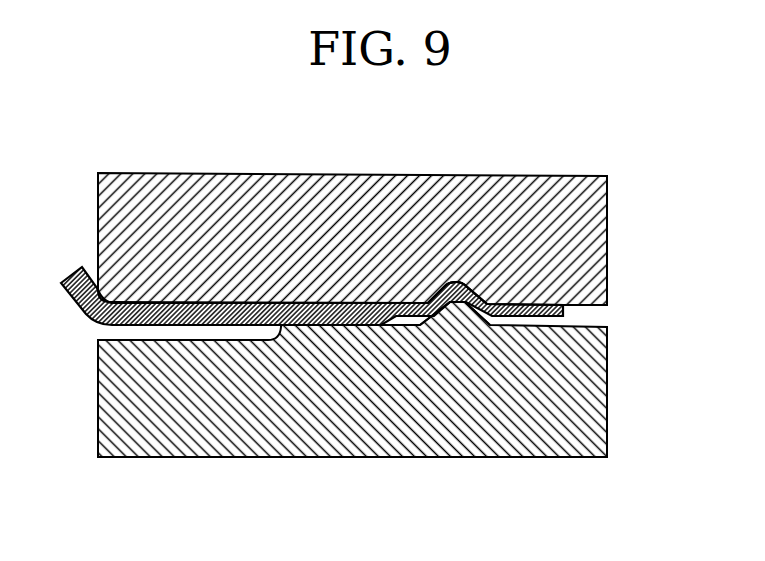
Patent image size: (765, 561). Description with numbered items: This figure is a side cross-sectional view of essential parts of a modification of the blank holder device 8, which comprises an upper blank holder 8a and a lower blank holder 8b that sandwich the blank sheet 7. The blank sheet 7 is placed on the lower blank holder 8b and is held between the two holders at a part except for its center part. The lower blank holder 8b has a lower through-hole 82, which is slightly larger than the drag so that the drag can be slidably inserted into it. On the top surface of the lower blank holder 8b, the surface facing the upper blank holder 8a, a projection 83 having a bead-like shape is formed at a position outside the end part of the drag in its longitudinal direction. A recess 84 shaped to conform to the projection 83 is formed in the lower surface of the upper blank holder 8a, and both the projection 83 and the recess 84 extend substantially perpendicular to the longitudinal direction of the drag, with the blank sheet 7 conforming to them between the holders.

The blank sheet 7 is at (75, 300).
The blank holder device 8 is at (370, 319).
The upper blank holder 8a is at (381, 214).
The lower blank holder 8b is at (349, 409).
The lower through-hole 82 is at (97, 407).
The projection 83 is at (455, 306).
The recess 84 is at (462, 282).